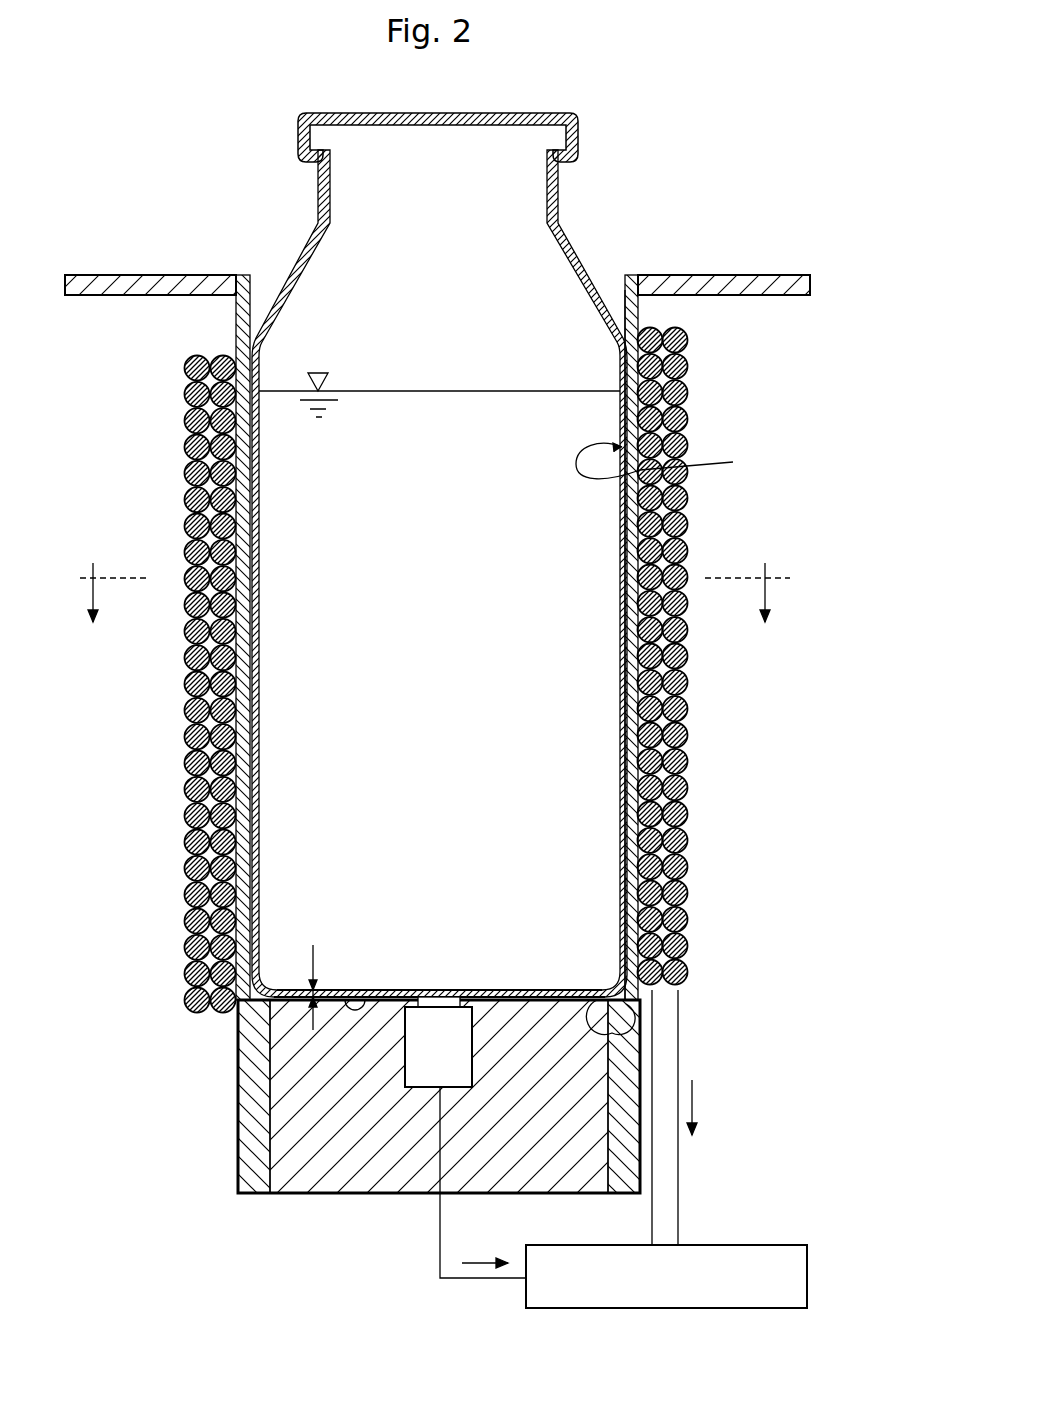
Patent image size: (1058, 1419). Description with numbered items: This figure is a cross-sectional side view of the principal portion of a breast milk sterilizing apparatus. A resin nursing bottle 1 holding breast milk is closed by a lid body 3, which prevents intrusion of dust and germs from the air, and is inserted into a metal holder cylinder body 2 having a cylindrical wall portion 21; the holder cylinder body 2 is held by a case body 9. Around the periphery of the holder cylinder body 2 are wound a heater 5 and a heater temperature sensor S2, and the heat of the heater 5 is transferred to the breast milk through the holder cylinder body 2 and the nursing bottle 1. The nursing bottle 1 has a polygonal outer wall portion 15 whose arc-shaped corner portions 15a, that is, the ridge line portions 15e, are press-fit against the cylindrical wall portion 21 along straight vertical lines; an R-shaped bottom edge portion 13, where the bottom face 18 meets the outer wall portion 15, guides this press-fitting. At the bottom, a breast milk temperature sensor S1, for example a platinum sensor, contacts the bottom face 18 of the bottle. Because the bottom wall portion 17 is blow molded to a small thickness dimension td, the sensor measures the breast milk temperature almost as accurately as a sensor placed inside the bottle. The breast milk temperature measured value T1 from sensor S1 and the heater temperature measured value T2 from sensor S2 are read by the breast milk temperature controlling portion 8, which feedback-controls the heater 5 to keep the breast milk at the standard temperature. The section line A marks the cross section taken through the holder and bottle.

The nursing bottle 1 is at (571, 238).
The holder cylinder body 2 is at (645, 305).
The lid body 3 is at (493, 110).
The heater 5 is at (425, 621).
The breast milk temperature controlling portion 8 is at (585, 1243).
The case body 9 is at (202, 272).
The bottom edge portion 13 is at (600, 1005).
The outer wall portion 15 is at (616, 540).
The corner portion 15a is at (425, 670).
The ridge line portion 15e is at (196, 650).
The bottom wall portion 17 is at (510, 990).
The bottom face 18 is at (360, 995).
The cylindrical wall portion 21 is at (671, 461).
The breast milk temperature sensor S1 is at (476, 1030).
The heater temperature sensor S2 is at (184, 372).
The breast milk temperature measured value T1 is at (478, 1258).
The heater temperature measured value T2 is at (694, 1098).
The thickness dimension td is at (301, 987).
The section line A is at (435, 610).